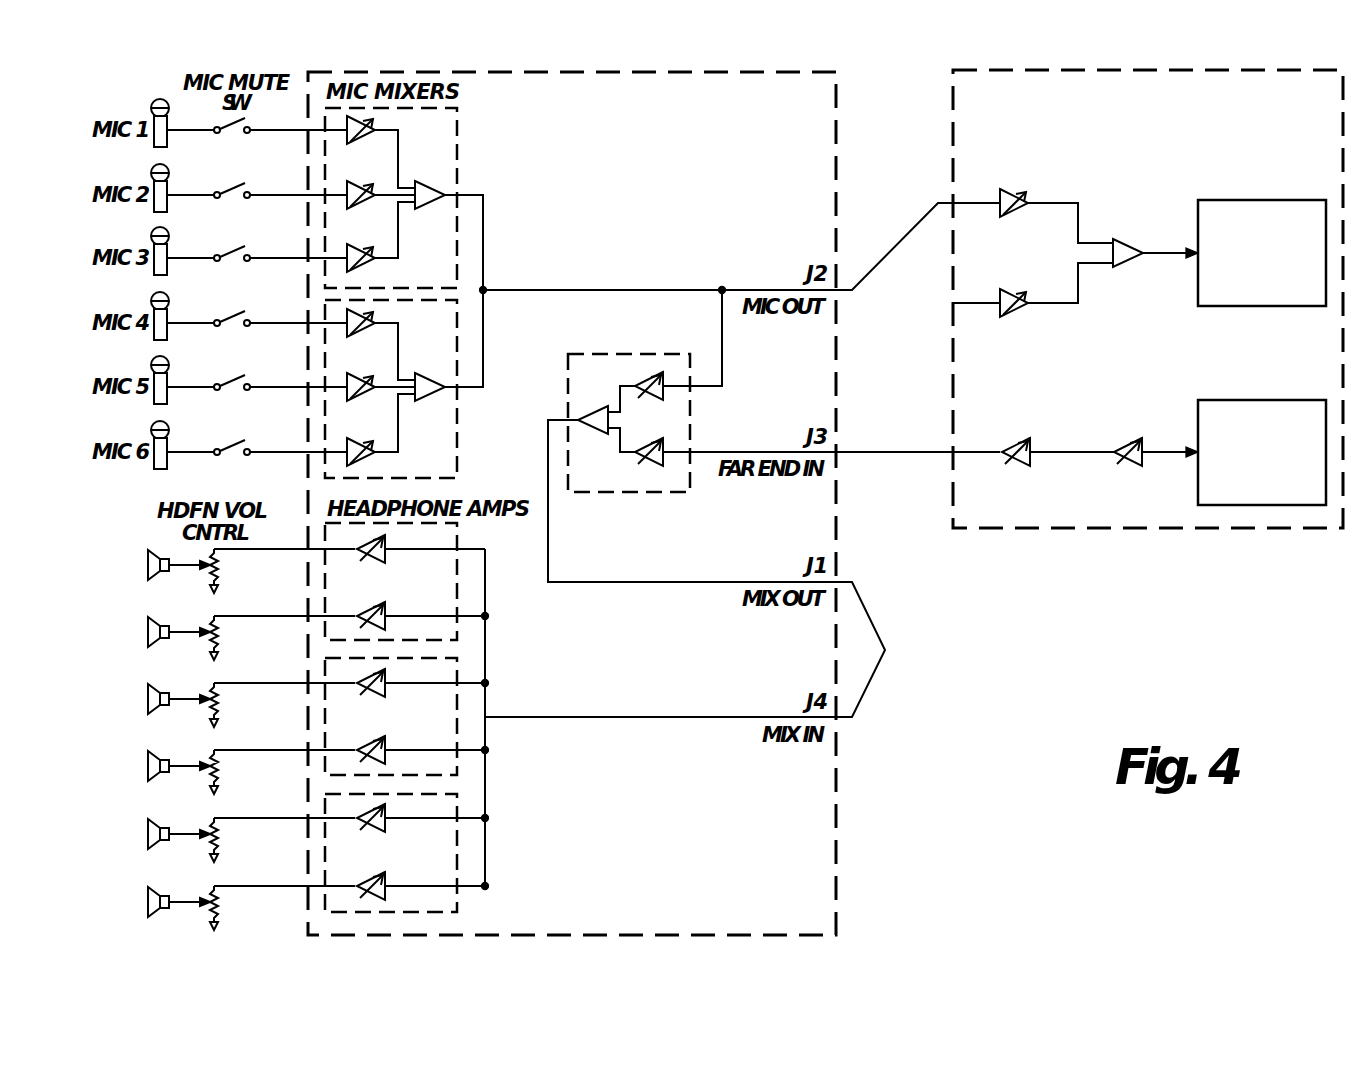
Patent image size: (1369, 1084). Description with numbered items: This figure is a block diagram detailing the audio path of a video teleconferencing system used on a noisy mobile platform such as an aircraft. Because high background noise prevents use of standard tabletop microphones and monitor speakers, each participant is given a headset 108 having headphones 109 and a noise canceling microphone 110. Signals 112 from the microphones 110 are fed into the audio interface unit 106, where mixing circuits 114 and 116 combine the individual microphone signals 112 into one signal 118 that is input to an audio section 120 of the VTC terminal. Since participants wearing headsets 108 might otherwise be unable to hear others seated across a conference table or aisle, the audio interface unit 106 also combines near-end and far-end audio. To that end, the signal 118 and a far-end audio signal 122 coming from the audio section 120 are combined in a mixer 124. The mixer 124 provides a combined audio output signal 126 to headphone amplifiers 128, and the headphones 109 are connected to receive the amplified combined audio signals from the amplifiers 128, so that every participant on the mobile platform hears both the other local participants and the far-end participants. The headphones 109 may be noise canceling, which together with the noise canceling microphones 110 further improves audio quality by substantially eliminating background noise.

The audio interface unit 106 is at (824, 134).
The headset 108 is at (99, 97).
The headphones 109 is at (160, 578).
The noise canceling microphone 110 is at (170, 146).
The signals 112 is at (295, 132).
The mixing circuit 114 is at (447, 139).
The mixing circuit 116 is at (447, 332).
The signal 118 is at (610, 288).
The audio section 120 is at (1294, 139).
The far-end audio signal 122 is at (885, 453).
The mixer 124 is at (604, 354).
The combined audio output signal 126 is at (548, 545).
The headphone amplifiers 128 is at (441, 589).